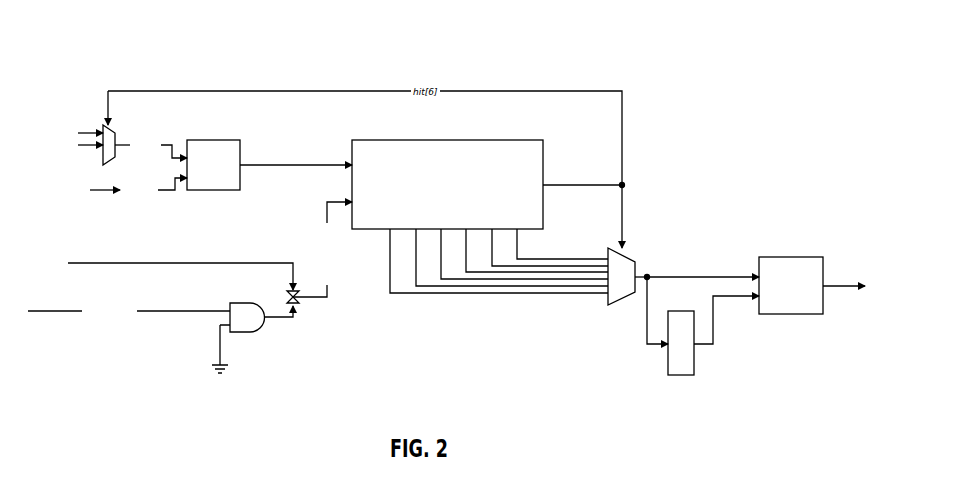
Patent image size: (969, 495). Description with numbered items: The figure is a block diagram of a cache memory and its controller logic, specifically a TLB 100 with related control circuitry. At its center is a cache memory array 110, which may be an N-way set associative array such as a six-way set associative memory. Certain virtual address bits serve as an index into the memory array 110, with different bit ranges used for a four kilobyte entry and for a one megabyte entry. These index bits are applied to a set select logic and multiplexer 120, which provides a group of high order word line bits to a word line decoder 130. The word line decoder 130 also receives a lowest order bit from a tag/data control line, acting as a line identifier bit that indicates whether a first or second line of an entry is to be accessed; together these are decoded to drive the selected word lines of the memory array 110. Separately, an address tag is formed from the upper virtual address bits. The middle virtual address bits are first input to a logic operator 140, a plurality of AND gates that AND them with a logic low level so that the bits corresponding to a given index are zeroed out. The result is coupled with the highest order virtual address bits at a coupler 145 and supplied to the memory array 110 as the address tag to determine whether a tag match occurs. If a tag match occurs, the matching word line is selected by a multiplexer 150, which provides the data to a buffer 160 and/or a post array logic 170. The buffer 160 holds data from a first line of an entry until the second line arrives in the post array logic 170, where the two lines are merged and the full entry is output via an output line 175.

The TLB 100 is at (692, 78).
The cache memory array 110 is at (407, 140).
The set select logic and multiplexer 120 is at (109, 131).
The word line decoder 130 is at (215, 140).
The logic operator 140 is at (259, 328).
The coupler 145 is at (300, 305).
The multiplexer 150 is at (634, 252).
The buffer 160 is at (694, 360).
The post array logic 170 is at (790, 257).
The output line 175 is at (835, 286).